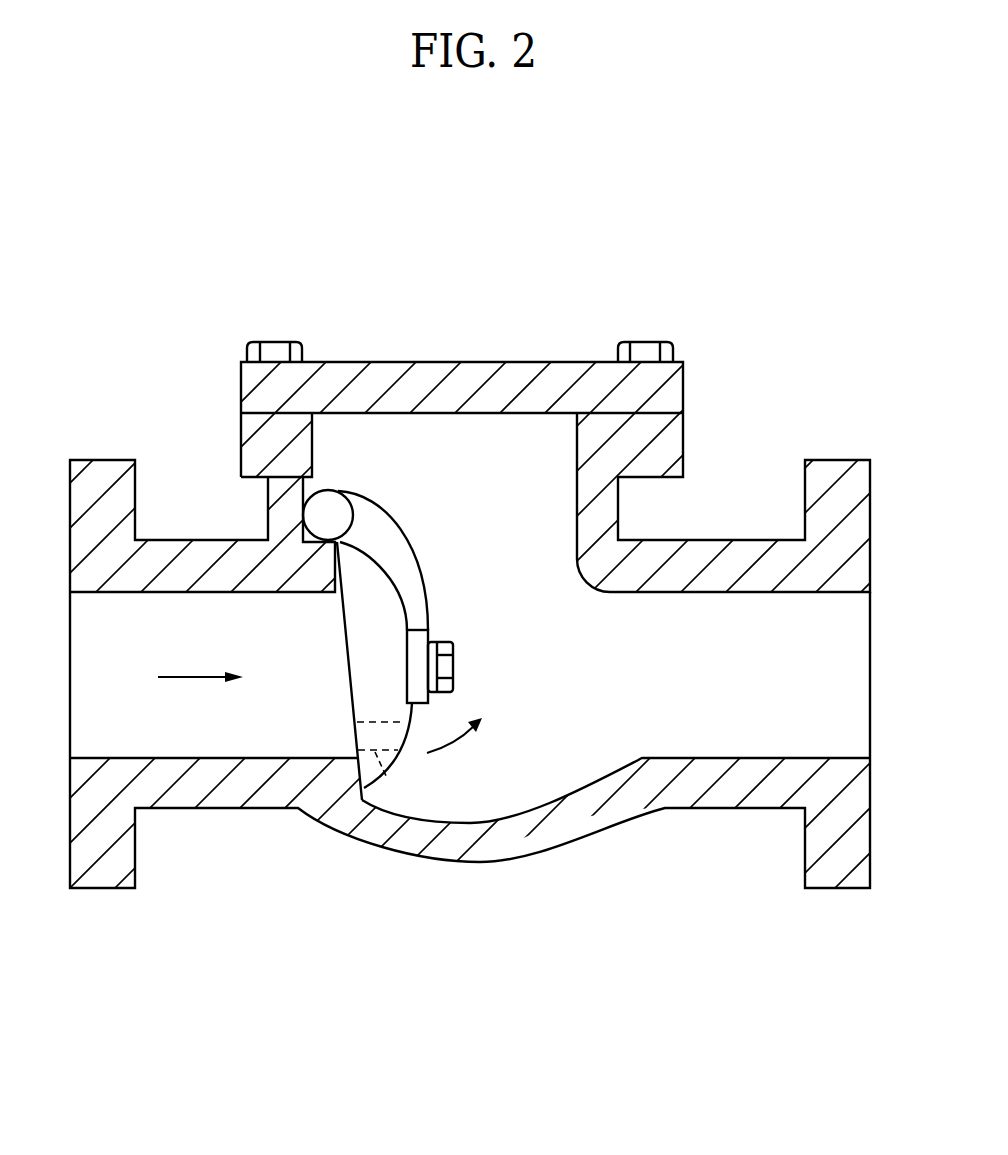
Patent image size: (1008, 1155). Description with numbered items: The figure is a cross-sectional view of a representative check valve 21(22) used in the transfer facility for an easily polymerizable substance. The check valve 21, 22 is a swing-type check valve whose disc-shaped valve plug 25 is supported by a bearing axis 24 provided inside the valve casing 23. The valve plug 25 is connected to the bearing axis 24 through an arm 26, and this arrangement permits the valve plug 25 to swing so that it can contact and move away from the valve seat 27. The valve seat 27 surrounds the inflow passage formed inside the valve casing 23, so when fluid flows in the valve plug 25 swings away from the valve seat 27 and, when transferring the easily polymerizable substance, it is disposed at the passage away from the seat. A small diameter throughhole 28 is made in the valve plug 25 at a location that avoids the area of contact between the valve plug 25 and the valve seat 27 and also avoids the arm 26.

The check valve 21 is at (504, 577).
The check valve 22 is at (428, 282).
The valve casing 23 is at (533, 843).
The bearing axis 24 is at (333, 506).
The valve plug 25 is at (385, 598).
The arm 26 is at (393, 527).
The valve seat 27 is at (325, 568).
The small diameter throughhole 28 is at (388, 778).